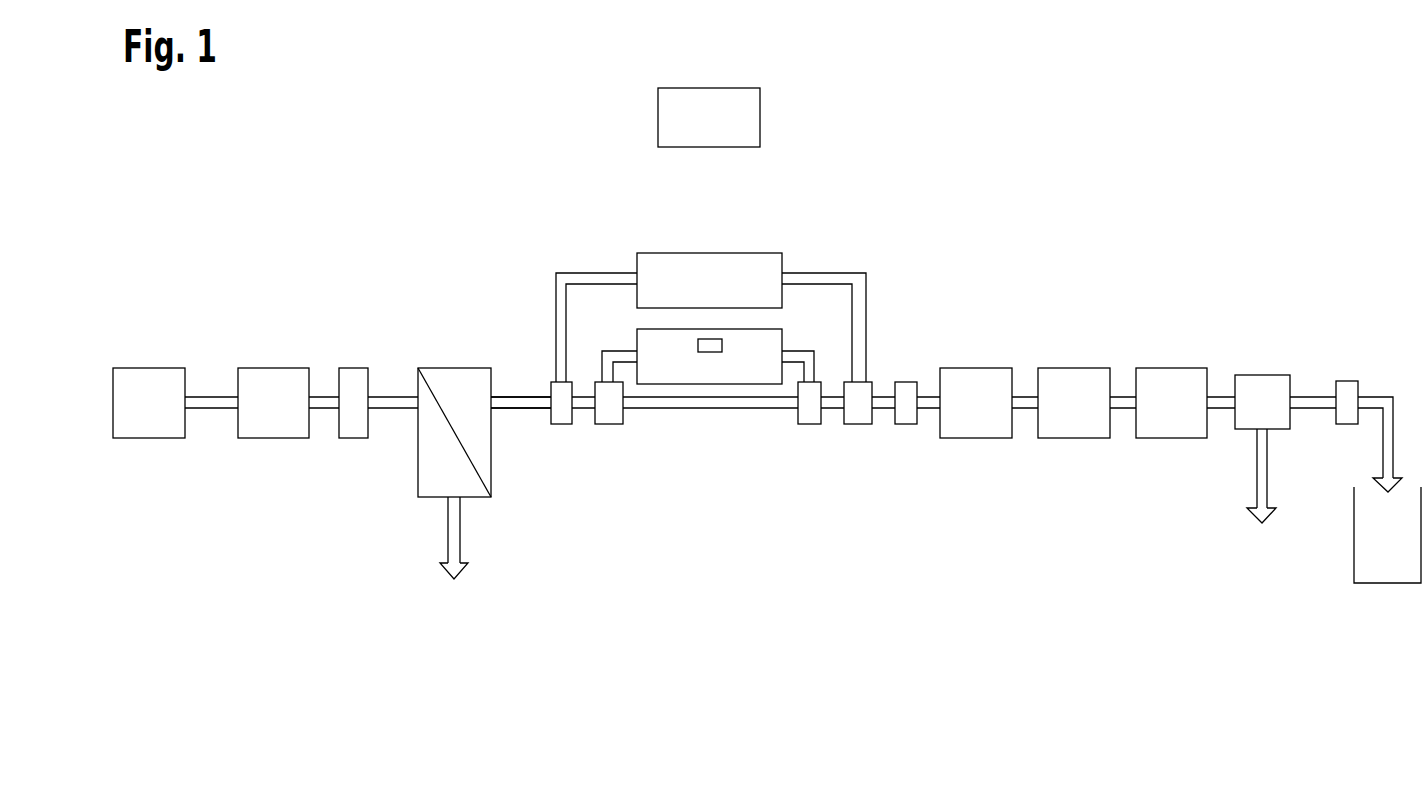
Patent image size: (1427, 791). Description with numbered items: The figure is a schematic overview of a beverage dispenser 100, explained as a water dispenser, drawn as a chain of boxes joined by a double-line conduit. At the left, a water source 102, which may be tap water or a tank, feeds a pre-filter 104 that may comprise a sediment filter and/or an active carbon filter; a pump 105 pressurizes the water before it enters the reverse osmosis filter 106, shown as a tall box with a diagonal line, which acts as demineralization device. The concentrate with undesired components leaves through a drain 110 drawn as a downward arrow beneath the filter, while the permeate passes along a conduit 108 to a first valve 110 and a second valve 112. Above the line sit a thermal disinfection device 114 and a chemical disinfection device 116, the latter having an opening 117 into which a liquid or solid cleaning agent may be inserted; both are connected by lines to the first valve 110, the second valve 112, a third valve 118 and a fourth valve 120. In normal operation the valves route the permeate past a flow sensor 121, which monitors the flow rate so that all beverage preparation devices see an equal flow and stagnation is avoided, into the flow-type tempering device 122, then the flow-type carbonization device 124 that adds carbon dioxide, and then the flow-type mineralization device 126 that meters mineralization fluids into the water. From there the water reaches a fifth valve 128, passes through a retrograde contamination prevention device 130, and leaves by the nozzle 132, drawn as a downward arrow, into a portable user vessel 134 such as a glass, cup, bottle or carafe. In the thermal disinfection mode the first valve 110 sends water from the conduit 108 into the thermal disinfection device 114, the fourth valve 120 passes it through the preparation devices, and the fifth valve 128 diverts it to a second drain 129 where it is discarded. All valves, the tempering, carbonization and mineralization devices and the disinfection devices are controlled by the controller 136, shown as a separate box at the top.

The beverage dispenser 100 is at (1232, 117).
The water source 102 is at (146, 375).
The pre-filter 104 is at (270, 375).
The pump 105 is at (352, 375).
The reverse osmosis filter 106 is at (453, 358).
The conduit 108 is at (517, 412).
The first valve 110 is at (562, 426).
The second valve 112 is at (610, 426).
The thermal disinfection device 114 is at (707, 258).
The chemical disinfection device 116 is at (712, 386).
The opening 117 is at (698, 346).
The third valve 118 is at (810, 426).
The fourth valve 120 is at (860, 426).
The flow sensor 121 is at (906, 426).
The flow-type tempering device 122 is at (973, 375).
The flow-type carbonization device 124 is at (1070, 375).
The flow-type mineralization device 126 is at (1168, 375).
The fifth valve 128 is at (1260, 382).
The drain 129 is at (1257, 492).
The retrograde contamination prevention device 130 is at (1347, 382).
The nozzle 132 is at (1383, 464).
The portable user vessel 134 is at (1389, 575).
The controller 136 is at (757, 118).